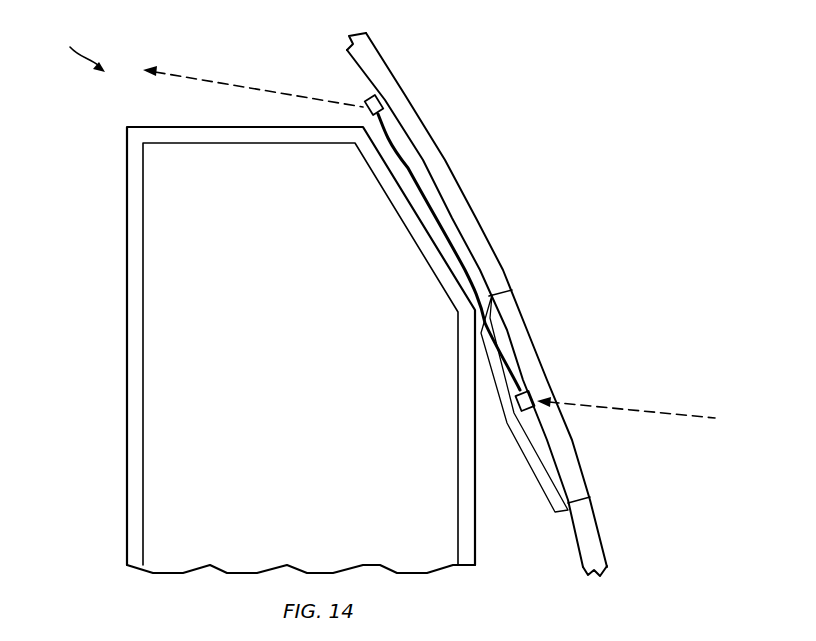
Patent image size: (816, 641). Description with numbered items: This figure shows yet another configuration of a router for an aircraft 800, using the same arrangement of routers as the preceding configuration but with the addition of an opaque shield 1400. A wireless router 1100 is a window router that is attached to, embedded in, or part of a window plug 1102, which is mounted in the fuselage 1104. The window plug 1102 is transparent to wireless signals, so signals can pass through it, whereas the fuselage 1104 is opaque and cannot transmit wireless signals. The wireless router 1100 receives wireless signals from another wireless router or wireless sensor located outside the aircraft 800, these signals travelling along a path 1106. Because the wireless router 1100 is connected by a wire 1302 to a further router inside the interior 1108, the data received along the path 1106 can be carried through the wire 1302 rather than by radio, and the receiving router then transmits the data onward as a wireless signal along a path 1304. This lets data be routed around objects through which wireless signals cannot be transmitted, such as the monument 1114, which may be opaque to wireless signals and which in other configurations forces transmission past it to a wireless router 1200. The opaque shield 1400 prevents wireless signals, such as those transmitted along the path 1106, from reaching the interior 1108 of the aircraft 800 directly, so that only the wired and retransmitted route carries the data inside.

The aircraft 800 is at (427, 127).
The wireless router 1100 is at (515, 404).
The window plug 1102 is at (537, 352).
The fuselage 1104 is at (483, 232).
The path 1106 is at (626, 434).
The interior 1108 is at (76, 47).
The monument 1114 is at (322, 376).
The wireless router 1200 is at (363, 96).
The wire 1302 is at (433, 205).
The path 1304 is at (202, 78).
The opaque shield 1400 is at (542, 490).